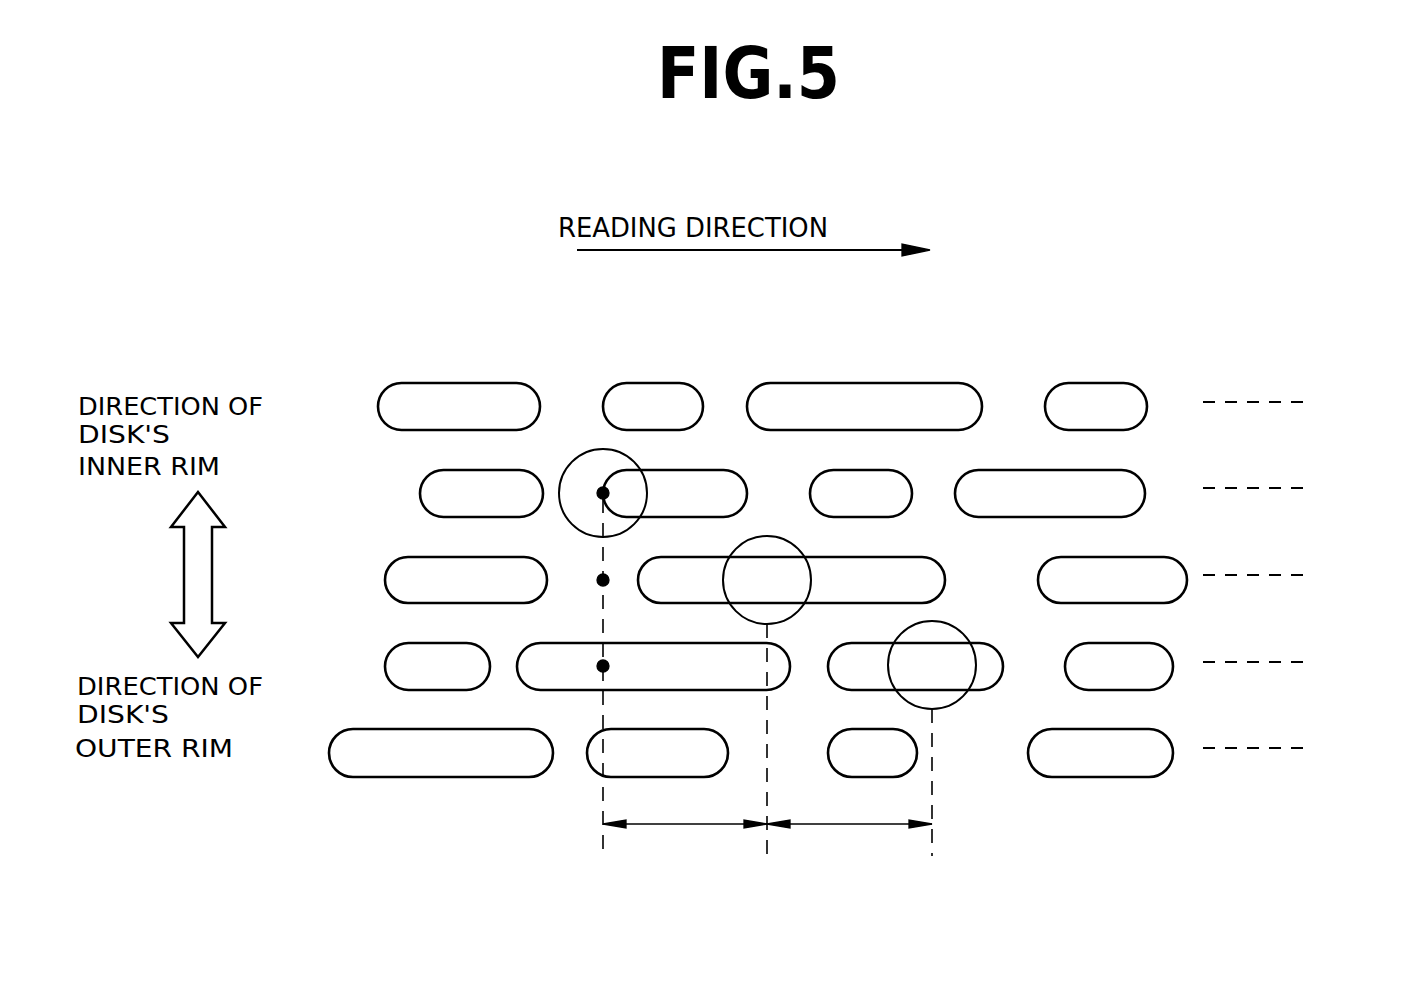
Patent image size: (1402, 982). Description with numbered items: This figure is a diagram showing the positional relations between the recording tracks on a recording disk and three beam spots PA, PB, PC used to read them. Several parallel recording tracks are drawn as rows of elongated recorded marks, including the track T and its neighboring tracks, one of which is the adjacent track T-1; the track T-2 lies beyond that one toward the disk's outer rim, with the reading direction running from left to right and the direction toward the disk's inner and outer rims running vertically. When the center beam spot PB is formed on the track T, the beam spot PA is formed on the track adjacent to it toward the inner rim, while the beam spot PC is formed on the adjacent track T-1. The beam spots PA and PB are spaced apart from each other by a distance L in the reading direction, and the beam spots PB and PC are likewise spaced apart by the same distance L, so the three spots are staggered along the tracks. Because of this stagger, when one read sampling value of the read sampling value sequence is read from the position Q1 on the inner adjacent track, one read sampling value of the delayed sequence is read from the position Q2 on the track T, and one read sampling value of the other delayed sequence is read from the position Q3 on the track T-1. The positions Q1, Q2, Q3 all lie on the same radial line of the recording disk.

The beam spot PA is at (597, 449).
The center beam spot PB is at (777, 536).
The beam spot PC is at (947, 622).
The position on recording track T+1 Q1 is at (583, 493).
The position on recording track T Q2 is at (583, 581).
The position on recording track T-1 Q3 is at (583, 667).
The distance L is at (767, 840).
The recording track T is at (1285, 576).
The adjacent recording track T-1 is at (1299, 661).
The track T-2 is at (1300, 749).